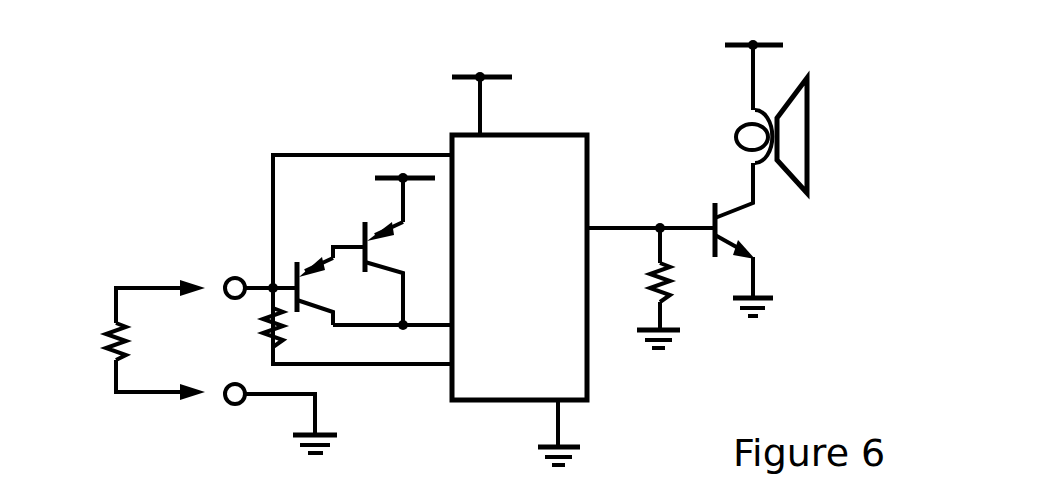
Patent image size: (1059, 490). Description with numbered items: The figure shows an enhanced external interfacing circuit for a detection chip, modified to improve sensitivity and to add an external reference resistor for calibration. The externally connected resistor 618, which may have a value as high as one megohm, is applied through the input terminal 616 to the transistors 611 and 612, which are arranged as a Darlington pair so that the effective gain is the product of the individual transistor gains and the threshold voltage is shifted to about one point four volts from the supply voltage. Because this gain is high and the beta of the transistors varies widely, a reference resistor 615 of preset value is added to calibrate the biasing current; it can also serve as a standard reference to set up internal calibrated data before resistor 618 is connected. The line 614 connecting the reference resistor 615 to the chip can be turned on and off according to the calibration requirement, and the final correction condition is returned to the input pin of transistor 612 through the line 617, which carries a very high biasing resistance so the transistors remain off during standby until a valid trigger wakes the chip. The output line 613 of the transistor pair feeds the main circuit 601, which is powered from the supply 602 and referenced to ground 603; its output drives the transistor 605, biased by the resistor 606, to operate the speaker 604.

The control circuit 601 is at (550, 165).
The power supply 602 is at (500, 72).
The ground 603 is at (562, 432).
The speaker 604 is at (813, 110).
The output transistor 605 is at (732, 220).
The resistor 606 is at (673, 292).
The transistor 611 is at (393, 223).
The transistor 612 is at (325, 265).
The output line 613 is at (358, 328).
The line 614 is at (325, 364).
The reference resistor 615 is at (262, 328).
The input terminal 616 is at (260, 280).
The line 617 is at (333, 155).
The resistor 618 is at (108, 340).